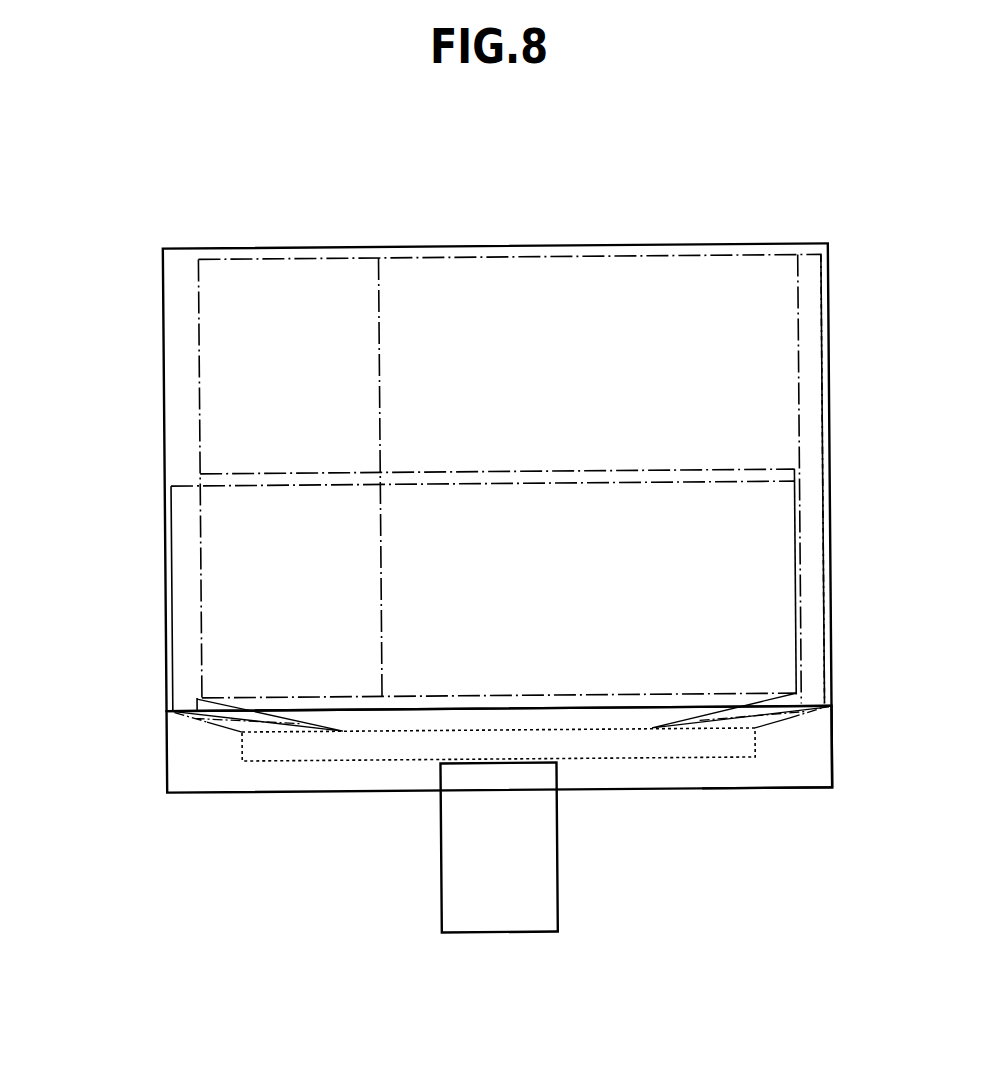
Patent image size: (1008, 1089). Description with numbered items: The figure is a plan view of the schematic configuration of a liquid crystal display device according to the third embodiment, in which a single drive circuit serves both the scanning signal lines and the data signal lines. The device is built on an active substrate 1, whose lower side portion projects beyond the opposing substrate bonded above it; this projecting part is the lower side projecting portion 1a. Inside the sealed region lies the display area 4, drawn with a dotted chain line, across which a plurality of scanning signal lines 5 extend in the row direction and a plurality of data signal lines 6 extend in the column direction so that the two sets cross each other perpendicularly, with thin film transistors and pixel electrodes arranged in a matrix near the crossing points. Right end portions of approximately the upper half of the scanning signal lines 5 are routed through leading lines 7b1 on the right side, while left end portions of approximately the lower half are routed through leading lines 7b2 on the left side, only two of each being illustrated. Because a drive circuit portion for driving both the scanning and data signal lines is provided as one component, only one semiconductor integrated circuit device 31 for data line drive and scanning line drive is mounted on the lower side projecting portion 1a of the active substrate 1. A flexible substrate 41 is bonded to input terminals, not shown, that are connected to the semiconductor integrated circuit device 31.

The active substrate 1 is at (205, 776).
The lower side projecting portion 1a is at (795, 777).
The display area 4 is at (607, 284).
The scanning signal lines 5 is at (560, 468).
The data signal lines 6 is at (383, 569).
The leading lines 7b1 is at (800, 550).
The leading lines 7b2 is at (186, 600).
The semiconductor integrated circuit device 31 is at (371, 739).
The flexible substrate 41 is at (540, 870).